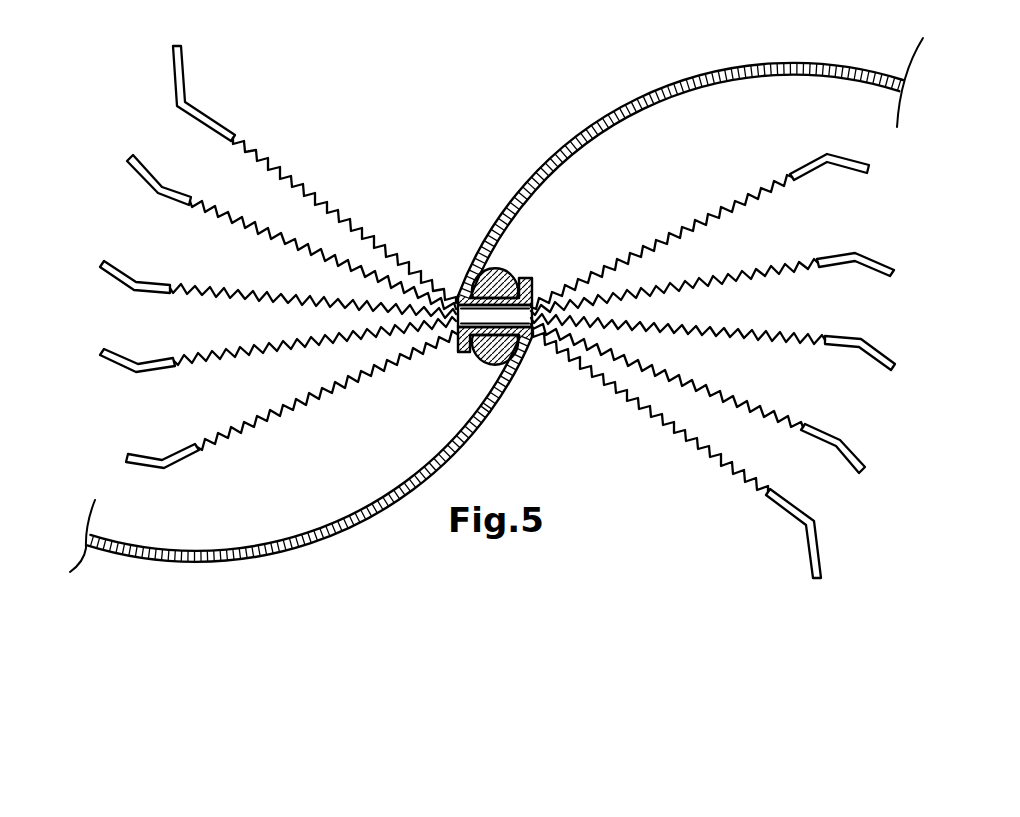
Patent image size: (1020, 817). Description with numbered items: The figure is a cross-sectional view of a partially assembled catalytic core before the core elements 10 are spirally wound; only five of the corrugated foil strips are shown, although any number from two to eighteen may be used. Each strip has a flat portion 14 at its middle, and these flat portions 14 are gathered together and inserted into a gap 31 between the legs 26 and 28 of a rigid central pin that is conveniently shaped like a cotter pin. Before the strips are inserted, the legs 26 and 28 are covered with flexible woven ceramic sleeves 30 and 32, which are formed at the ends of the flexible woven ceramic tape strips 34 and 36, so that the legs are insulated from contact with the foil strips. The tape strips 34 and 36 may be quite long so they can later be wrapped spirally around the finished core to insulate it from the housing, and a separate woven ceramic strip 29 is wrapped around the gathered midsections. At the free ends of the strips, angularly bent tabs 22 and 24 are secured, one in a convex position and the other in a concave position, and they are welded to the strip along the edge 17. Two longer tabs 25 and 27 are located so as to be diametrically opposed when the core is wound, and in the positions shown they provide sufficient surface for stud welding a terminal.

The core elements 10 is at (107, 372).
The flat portion 14 is at (530, 330).
The edge 17 is at (233, 137).
The tab 22 is at (843, 158).
The tab 24 is at (162, 187).
The tab 25 is at (190, 102).
The leg 26 is at (465, 263).
The tab 27 is at (807, 557).
The leg 28 is at (498, 360).
The woven ceramic strip 29 is at (517, 357).
The flexible woven ceramic sleeve 30 is at (467, 263).
The gap 31 is at (510, 267).
The flexible woven ceramic sleeve 32 is at (482, 412).
The flexible woven ceramic tape strip 34 is at (658, 93).
The flexible woven ceramic tape strip 36 is at (293, 547).